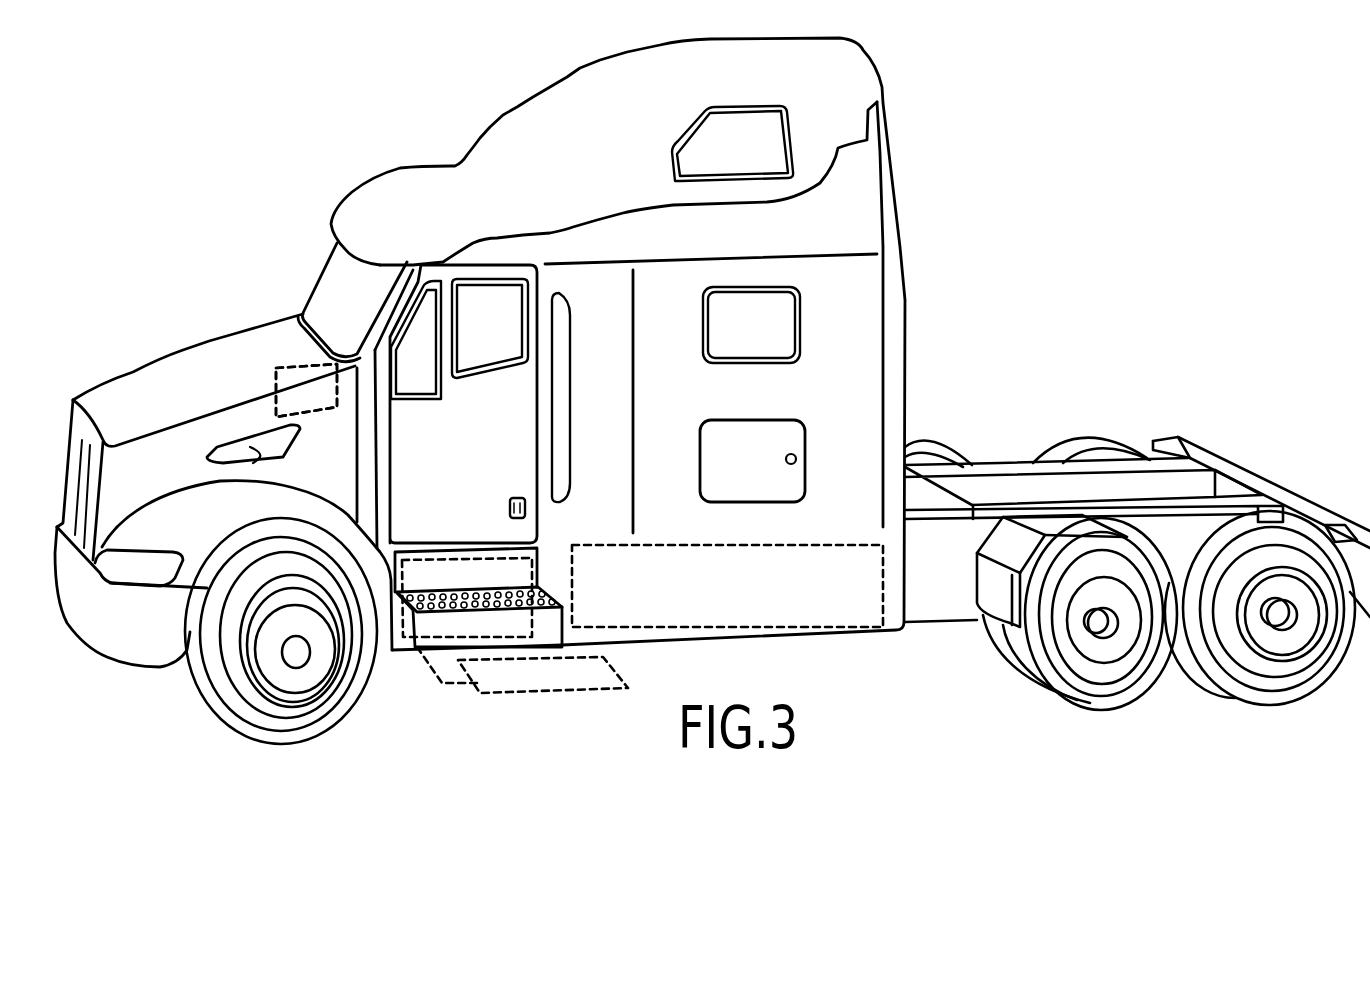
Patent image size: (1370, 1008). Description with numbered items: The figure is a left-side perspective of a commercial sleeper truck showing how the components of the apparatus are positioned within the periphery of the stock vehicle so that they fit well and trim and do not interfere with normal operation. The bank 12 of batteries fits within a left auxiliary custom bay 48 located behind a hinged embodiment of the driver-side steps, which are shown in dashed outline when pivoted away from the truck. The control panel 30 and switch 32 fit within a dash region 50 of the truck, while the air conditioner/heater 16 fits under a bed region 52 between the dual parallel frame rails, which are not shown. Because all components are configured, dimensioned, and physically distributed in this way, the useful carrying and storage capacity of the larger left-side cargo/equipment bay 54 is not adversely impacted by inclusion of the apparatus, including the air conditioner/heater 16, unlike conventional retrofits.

The bank of batteries 12 is at (468, 556).
The air conditioner/heater 16 is at (853, 626).
The control panel 30 is at (283, 370).
The switch 32 is at (306, 390).
The left auxiliary custom bay 48 is at (547, 592).
The dash region 50 is at (284, 345).
The bed region 52 is at (778, 445).
The left-side cargo/equipment bay 54 is at (700, 452).